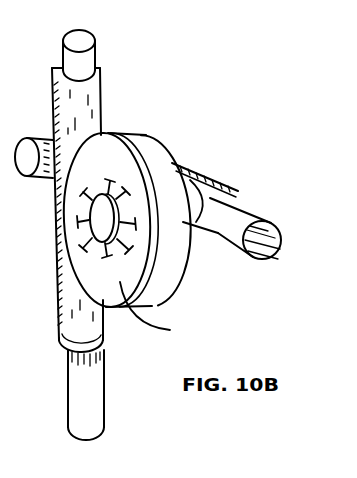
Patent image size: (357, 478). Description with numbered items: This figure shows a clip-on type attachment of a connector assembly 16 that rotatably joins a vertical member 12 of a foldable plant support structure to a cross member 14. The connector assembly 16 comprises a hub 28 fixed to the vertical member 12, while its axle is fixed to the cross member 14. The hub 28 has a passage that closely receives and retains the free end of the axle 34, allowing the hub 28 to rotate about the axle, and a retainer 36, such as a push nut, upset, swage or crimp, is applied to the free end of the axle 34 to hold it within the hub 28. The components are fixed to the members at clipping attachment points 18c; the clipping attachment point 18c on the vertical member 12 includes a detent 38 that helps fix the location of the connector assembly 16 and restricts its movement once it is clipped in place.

The vertical member 12 is at (88, 420).
The cross member 14 is at (258, 216).
The connector assembly 16 is at (131, 130).
The clipping attachment point 18c is at (100, 80).
The hub 28 is at (155, 143).
The free end of the axle 34 is at (113, 244).
The retainer 36 is at (166, 312).
The detent 38 is at (108, 345).